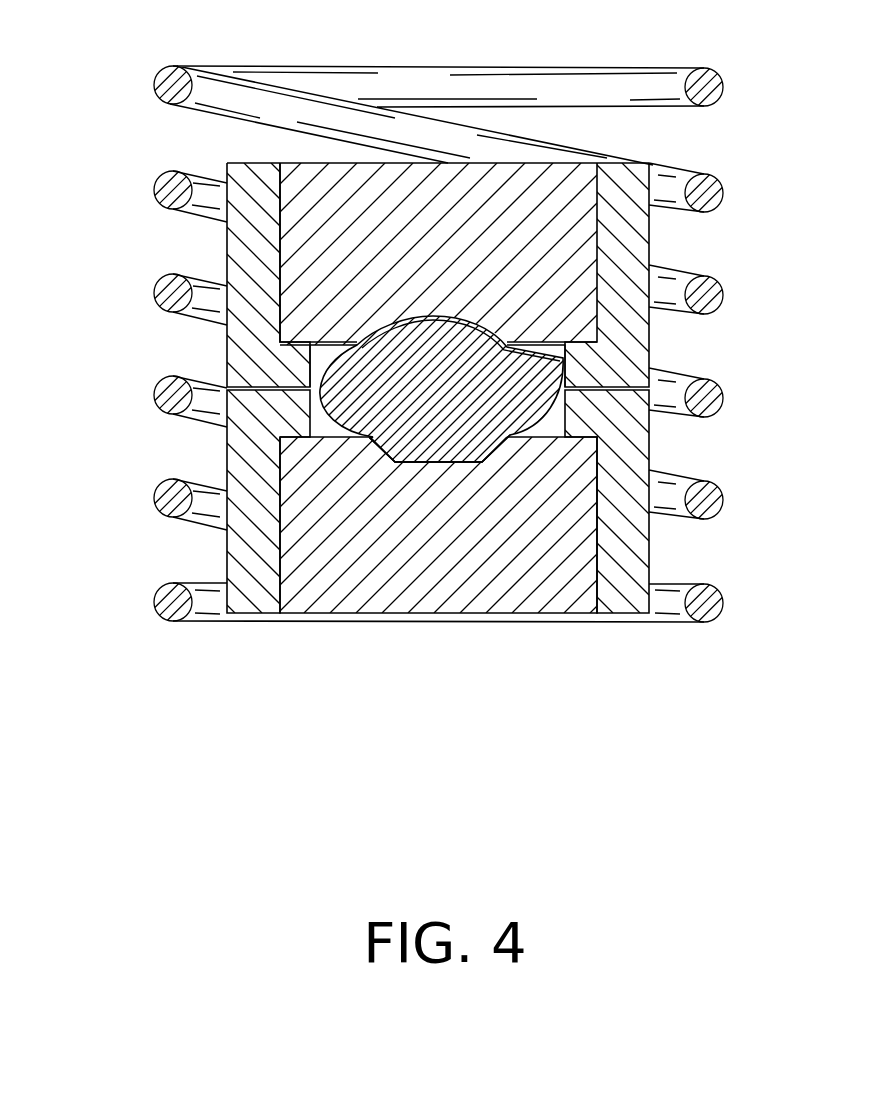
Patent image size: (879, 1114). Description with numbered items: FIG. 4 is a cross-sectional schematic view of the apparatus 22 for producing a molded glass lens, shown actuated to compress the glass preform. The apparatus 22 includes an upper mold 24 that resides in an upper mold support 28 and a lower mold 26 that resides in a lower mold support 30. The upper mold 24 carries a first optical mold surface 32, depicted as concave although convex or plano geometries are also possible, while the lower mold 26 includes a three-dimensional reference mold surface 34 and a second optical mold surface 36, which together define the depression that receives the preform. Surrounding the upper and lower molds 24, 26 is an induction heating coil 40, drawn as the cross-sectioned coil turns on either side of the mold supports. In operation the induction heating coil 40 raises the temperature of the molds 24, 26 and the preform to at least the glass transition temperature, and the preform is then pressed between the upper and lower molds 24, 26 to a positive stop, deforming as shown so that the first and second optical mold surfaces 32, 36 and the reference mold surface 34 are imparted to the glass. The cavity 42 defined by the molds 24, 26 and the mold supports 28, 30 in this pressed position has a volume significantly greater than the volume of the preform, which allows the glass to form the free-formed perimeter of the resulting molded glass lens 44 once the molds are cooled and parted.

The apparatus 22 is at (125, 365).
The upper mold 24 is at (558, 183).
The lower mold 26 is at (540, 610).
The upper mold support 28 is at (618, 162).
The lower mold support 30 is at (250, 613).
The first optical mold surface 32 is at (445, 313).
The three-dimensional reference mold surface 34 is at (398, 448).
The second optical mold surface 36 is at (447, 465).
The induction heating coil 40 is at (725, 193).
The cavity 42 is at (320, 355).
The molded glass lens 44 is at (567, 366).